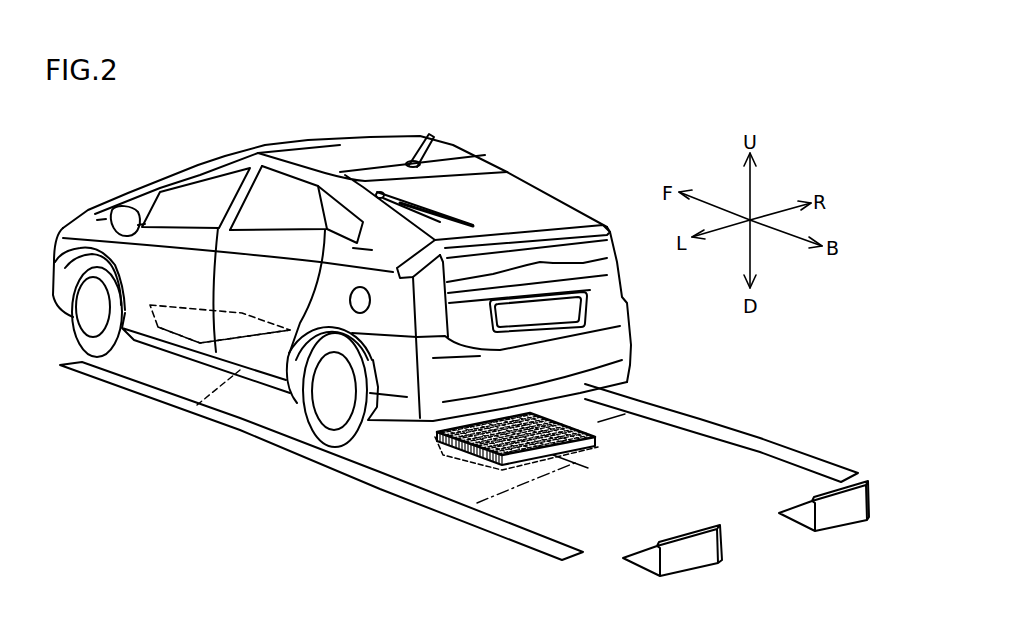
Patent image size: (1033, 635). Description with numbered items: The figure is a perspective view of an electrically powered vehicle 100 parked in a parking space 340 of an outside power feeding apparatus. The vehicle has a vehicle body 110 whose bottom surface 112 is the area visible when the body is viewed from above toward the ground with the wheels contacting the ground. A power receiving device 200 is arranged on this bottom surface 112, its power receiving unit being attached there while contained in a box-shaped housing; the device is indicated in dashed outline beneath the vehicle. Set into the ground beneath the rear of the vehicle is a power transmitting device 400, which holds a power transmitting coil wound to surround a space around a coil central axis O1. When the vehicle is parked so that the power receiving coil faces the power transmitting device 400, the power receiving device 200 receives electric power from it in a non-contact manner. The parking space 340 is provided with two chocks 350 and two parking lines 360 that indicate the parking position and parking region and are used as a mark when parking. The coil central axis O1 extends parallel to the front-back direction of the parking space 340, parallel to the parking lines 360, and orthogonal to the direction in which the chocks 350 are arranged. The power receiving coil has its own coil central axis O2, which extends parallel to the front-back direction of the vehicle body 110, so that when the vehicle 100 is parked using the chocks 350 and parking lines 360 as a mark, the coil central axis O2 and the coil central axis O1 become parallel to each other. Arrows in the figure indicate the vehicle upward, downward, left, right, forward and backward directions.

The electrically powered vehicle 100 is at (200, 140).
The vehicle body 110 is at (369, 150).
The bottom surface 112 is at (290, 372).
The power receiving device 200 is at (190, 338).
The power transmitting device 400 is at (449, 462).
The parking space 340 is at (612, 416).
The chocks 350 is at (690, 552).
The parking lines 360 is at (702, 422).
The coil central axis O1 is at (468, 511).
The coil central axis O2 is at (197, 405).